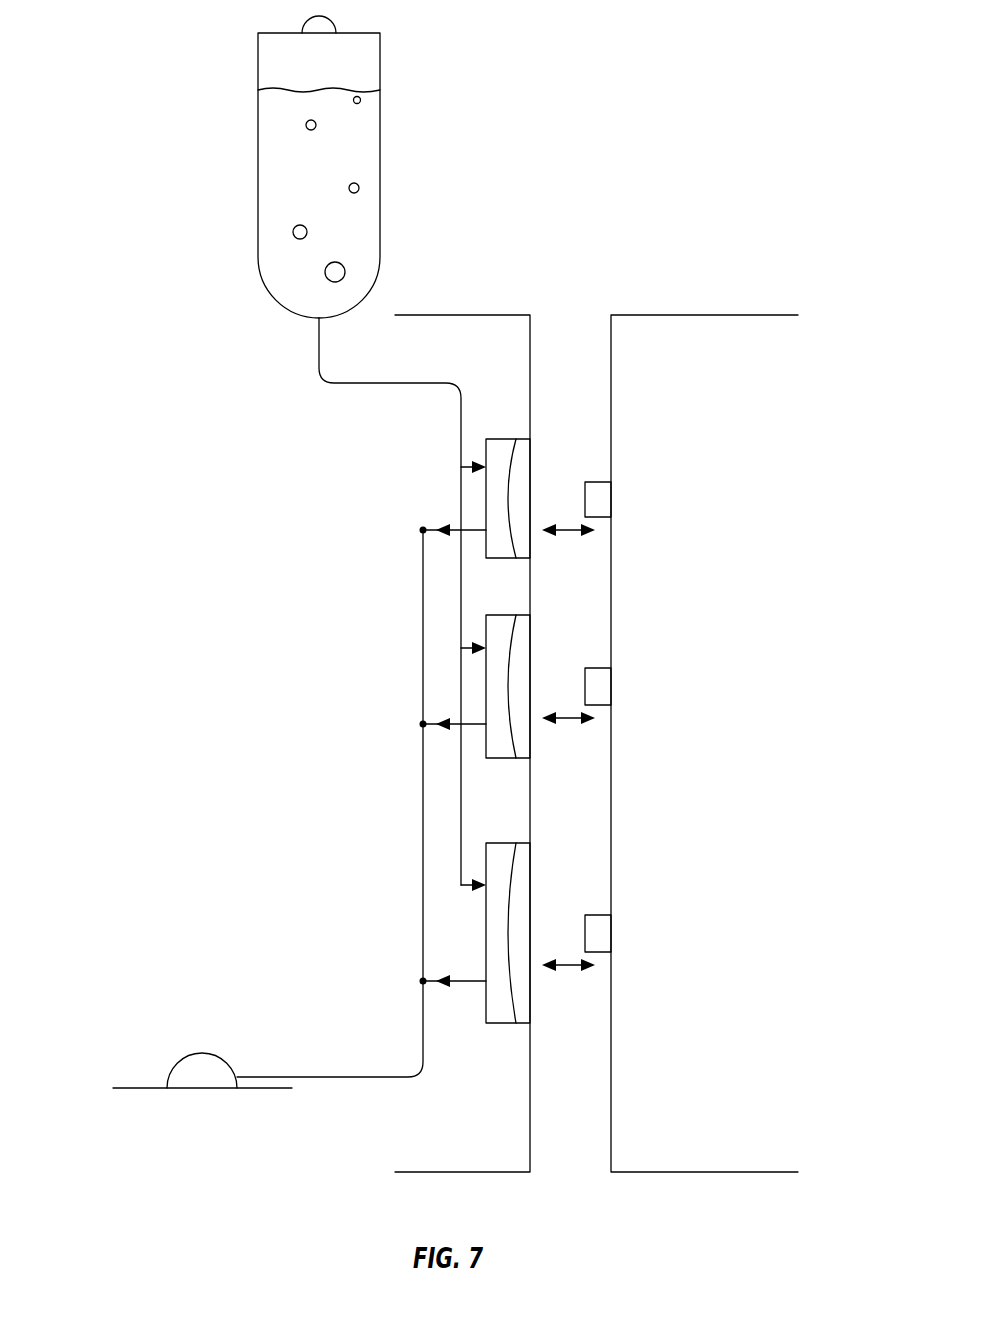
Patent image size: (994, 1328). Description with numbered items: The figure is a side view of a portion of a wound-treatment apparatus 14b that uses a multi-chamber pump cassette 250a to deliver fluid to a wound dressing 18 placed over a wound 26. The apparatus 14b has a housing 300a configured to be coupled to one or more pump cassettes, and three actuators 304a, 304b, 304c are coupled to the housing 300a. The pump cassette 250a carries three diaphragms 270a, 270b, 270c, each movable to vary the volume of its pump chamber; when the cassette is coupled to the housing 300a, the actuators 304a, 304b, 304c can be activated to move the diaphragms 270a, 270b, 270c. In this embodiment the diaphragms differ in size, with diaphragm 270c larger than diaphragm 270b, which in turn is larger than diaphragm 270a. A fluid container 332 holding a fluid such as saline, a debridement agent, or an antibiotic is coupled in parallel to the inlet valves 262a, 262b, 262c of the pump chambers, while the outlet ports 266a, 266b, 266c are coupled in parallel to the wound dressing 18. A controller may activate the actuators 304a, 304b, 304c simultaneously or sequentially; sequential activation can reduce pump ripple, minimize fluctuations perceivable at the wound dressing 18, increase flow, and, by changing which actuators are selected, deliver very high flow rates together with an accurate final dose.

The wound-treatment apparatus 14b is at (197, 185).
The fluid container 332 is at (380, 120).
The pump cassette 250a is at (462, 1172).
The housing 300a is at (705, 315).
The diaphragm 270a is at (530, 498).
The diaphragm 270b is at (530, 687).
The diaphragm 270c is at (530, 935).
The inlet valve 262a is at (484, 466).
The inlet valve 262b is at (484, 647).
The inlet valve 262c is at (484, 884).
The outlet port 266a is at (485, 529).
The outlet port 266b is at (485, 723).
The outlet port 266c is at (485, 980).
The actuator 304a is at (611, 498).
The actuator 304b is at (611, 686).
The actuator 304c is at (611, 933).
The wound dressing 18 is at (175, 1042).
The wound 26 is at (212, 1130).